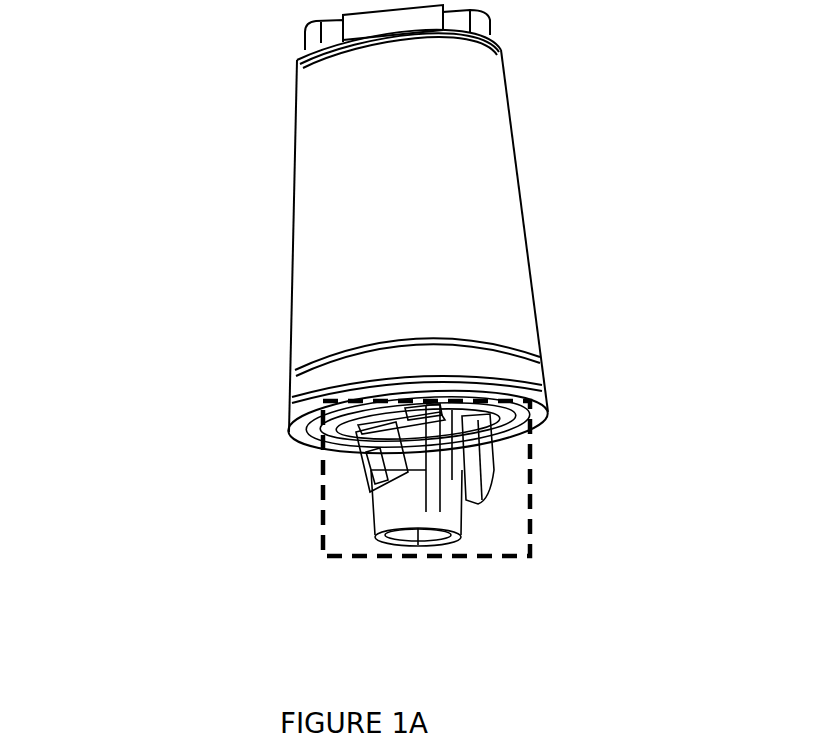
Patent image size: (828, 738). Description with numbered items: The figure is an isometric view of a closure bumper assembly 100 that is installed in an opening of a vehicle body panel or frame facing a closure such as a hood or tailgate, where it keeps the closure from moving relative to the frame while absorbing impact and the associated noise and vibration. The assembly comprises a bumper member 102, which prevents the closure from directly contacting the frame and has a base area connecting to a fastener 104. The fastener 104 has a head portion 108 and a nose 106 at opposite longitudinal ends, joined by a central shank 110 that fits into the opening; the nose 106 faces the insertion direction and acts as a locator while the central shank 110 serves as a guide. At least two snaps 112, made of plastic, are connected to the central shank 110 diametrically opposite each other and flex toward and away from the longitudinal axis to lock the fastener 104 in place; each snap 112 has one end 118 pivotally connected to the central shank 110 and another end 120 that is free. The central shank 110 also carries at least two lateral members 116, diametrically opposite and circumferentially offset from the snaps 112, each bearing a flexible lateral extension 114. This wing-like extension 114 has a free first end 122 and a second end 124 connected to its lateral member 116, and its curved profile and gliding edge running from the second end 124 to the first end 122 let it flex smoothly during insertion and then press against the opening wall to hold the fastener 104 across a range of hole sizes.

The closure bumper assembly 100 is at (138, 425).
The bumper member 102 is at (305, 200).
The fastener 104 is at (543, 503).
The nose 106 is at (437, 557).
The head portion 108 is at (547, 420).
The central shank 110 is at (403, 513).
The snaps 112 is at (362, 475).
The flexible lateral extension 114 is at (498, 444).
The lateral members 116 is at (462, 492).
The one end 118 is at (369, 430).
The other end 120 is at (373, 495).
The first end 122 is at (423, 414).
The second end 124 is at (431, 466).